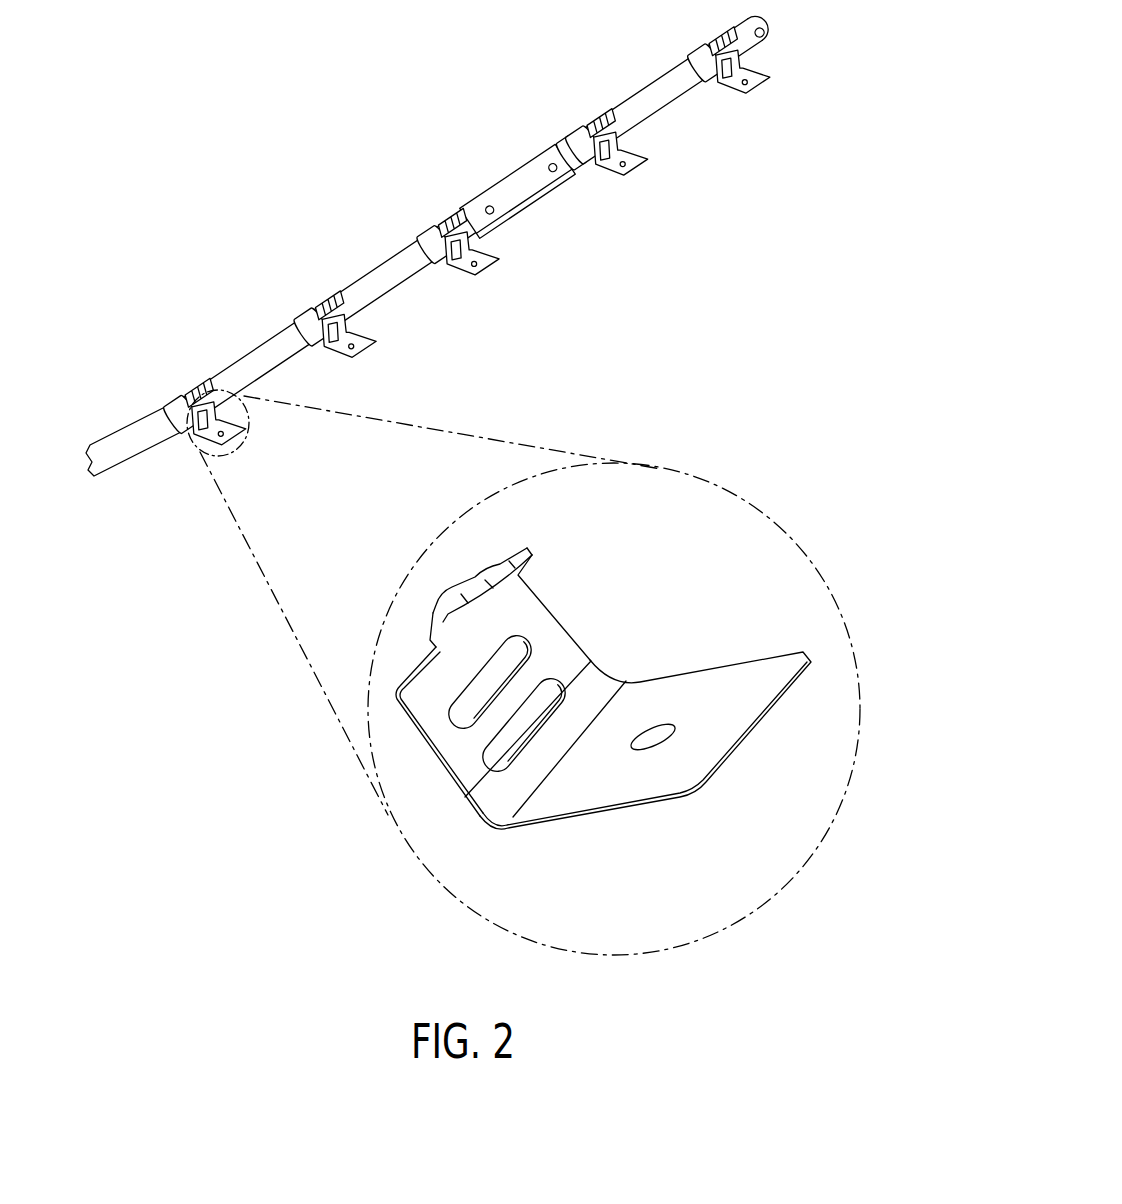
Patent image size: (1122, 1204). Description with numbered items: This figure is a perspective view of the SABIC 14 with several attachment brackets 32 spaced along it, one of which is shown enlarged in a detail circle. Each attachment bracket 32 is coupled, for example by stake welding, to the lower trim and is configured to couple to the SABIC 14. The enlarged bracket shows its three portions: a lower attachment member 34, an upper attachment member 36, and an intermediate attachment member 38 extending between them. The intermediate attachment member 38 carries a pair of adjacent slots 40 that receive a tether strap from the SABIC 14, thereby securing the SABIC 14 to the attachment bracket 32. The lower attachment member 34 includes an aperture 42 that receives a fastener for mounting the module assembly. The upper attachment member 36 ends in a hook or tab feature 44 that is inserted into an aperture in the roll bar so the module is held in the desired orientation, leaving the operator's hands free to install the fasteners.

The SABIC 14 is at (643, 100).
The attachment bracket 32 is at (750, 90).
The lower attachment member 34 is at (593, 807).
The upper attachment member 36 is at (477, 592).
The intermediate attachment member 38 is at (440, 775).
The slots 40 is at (533, 710).
The aperture 42 is at (660, 733).
The tab feature 44 is at (507, 560).